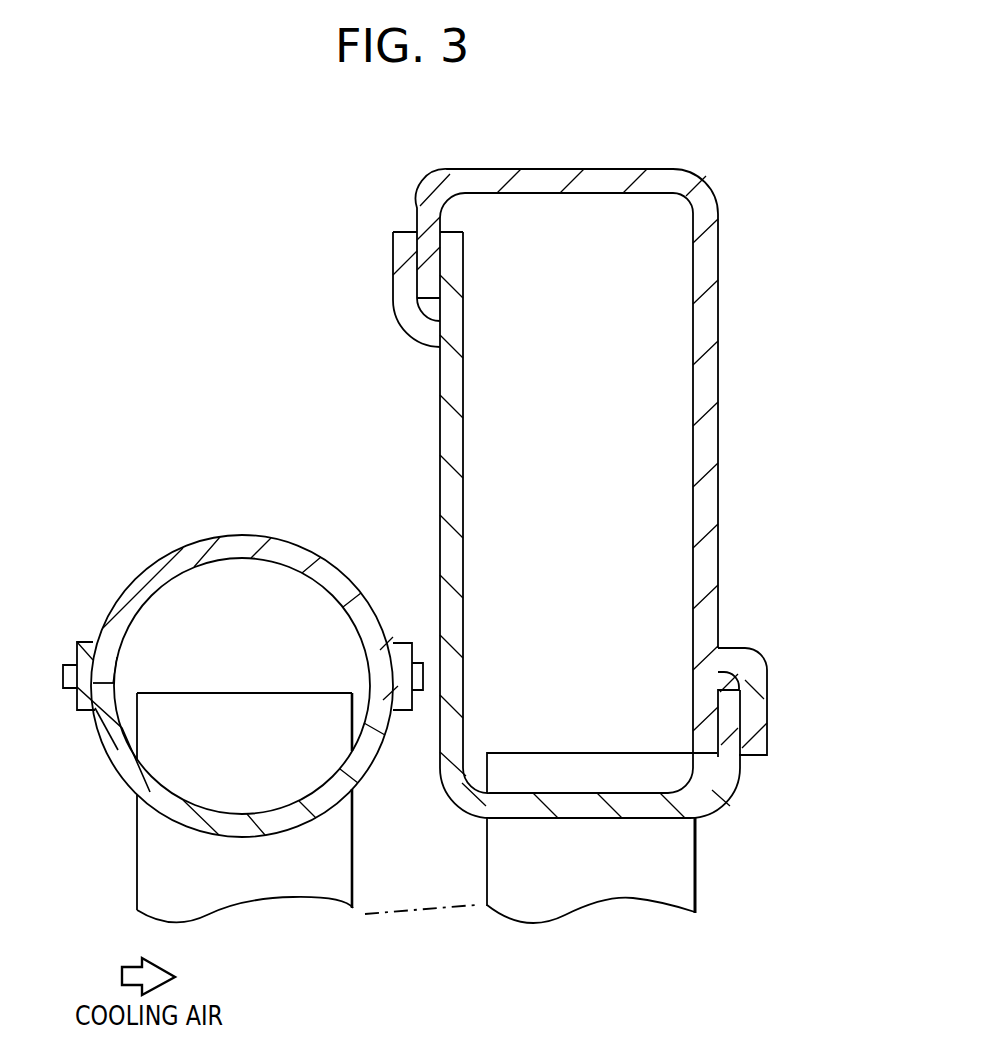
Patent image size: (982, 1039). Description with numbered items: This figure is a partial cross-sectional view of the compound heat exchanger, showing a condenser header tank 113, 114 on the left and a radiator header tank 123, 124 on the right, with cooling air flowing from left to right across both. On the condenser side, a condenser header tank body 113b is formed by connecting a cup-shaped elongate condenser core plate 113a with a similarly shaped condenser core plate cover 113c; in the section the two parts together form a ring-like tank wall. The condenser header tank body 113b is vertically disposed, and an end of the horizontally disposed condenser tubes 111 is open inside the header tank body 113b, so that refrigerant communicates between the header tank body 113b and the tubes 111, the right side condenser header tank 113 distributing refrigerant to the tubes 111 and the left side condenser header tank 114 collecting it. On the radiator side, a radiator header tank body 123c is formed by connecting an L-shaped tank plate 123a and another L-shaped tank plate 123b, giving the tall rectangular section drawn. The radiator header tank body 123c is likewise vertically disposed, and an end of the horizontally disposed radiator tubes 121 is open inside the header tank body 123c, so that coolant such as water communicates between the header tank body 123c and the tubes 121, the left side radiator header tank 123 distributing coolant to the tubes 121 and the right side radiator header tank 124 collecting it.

The condenser tube 111 is at (162, 863).
The condenser header tank 113 is at (233, 658).
The condenser header tank 114 is at (233, 658).
The condenser core plate 113a is at (108, 732).
The condenser header tank body 113b is at (290, 540).
The condenser core plate cover 113c is at (228, 553).
The radiator tube 121 is at (683, 867).
The radiator header tank 123 is at (607, 493).
The radiator header tank 124 is at (607, 493).
The L-shaped tank plate 123a is at (718, 535).
The L-shaped tank plate 123b is at (440, 418).
The radiator header tank body 123c is at (718, 415).